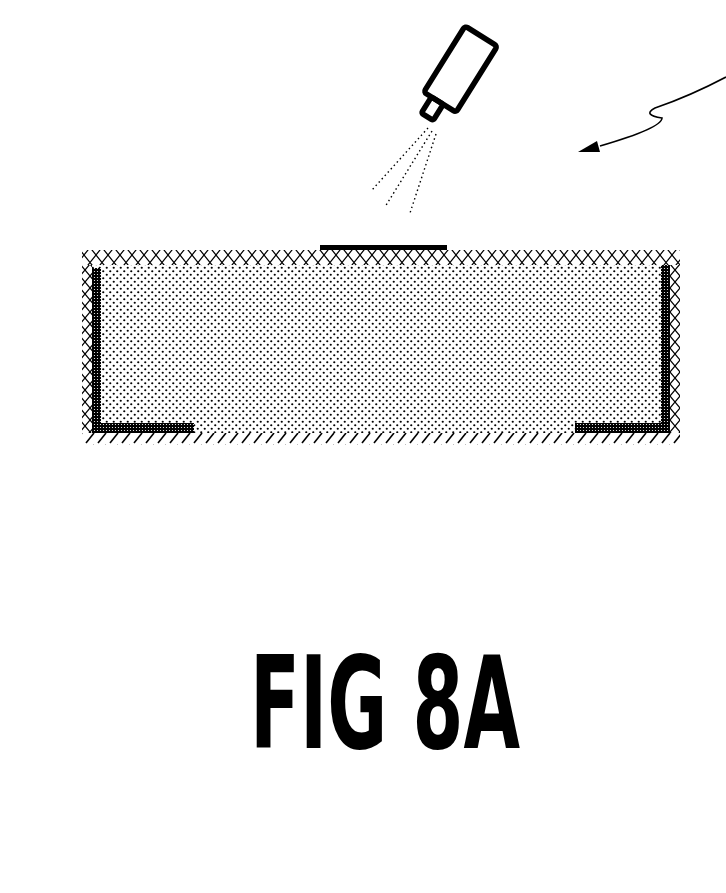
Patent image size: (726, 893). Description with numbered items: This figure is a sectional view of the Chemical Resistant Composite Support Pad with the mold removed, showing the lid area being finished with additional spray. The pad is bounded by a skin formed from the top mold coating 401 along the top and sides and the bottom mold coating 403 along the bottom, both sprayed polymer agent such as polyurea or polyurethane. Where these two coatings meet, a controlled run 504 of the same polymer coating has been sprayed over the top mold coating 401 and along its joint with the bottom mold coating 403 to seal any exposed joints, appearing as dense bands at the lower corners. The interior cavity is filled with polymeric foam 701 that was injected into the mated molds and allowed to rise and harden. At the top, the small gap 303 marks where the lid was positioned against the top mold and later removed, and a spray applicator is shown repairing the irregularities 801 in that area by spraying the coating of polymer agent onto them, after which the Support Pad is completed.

The small gap 303 is at (325, 246).
The top mold coating 401 is at (103, 432).
The bottom mold coating 403 is at (313, 440).
The controlled run 504 is at (102, 370).
The polymeric foam 701 is at (598, 293).
The irregularities 801 is at (347, 245).